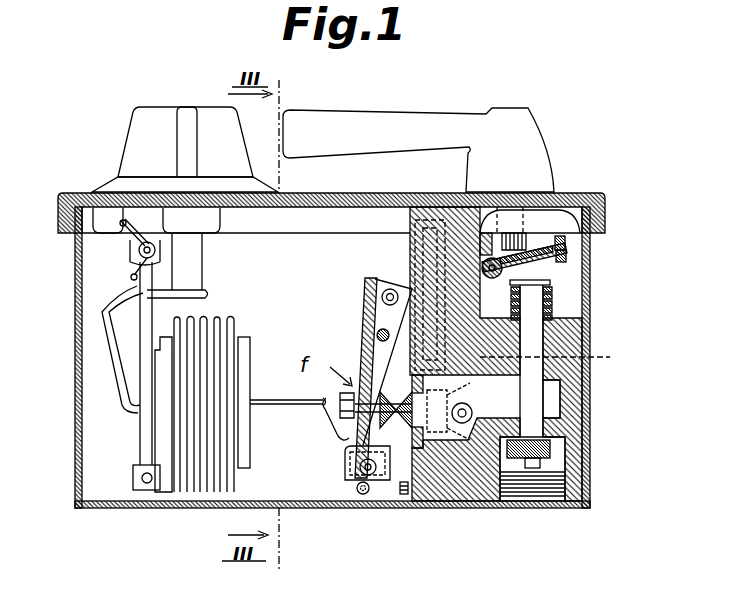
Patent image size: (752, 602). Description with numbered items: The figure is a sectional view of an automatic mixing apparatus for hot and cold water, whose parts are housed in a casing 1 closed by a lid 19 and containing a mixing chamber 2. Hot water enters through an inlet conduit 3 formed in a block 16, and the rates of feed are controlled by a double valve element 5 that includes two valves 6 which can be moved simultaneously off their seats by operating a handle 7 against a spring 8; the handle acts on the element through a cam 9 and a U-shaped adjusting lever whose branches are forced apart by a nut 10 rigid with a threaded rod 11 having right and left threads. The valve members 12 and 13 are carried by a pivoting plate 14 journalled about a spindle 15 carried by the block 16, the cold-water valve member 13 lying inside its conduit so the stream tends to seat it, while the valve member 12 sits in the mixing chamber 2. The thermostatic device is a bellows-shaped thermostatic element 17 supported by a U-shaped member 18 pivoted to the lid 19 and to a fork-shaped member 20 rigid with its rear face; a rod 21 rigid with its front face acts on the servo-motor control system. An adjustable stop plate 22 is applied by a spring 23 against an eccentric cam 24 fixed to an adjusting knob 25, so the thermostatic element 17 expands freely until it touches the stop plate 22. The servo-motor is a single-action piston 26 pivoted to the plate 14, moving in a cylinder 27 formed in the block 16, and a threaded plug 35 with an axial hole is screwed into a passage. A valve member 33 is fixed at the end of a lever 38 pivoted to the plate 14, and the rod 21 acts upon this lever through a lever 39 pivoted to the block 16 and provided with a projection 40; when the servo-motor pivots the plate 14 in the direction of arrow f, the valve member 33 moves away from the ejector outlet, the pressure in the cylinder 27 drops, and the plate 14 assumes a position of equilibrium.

The casing 1 is at (75, 448).
The mixing chamber 2 is at (270, 475).
The inlet conduit 3 is at (480, 500).
The double valve element 5 is at (533, 410).
The valve 6 is at (562, 457).
The handle 7 is at (518, 143).
The spring 8 is at (548, 310).
The cam 9 is at (573, 192).
The nut 10 is at (568, 255).
The threaded rod 11 is at (560, 241).
The valve member 12 is at (420, 500).
The valve member 13 is at (458, 480).
The pivoting plate 14 is at (360, 347).
The spindle 15 is at (378, 333).
The block 16 is at (382, 300).
The thermostatic element 17 is at (200, 452).
The U-shaped member 18 is at (147, 353).
The lid 19 is at (118, 192).
The fork-shaped member 20 is at (137, 483).
The rod 21 is at (287, 403).
The stop plate 22 is at (110, 335).
The spring 23 is at (132, 237).
The eccentric cam 24 is at (160, 292).
The adjusting knob 25 is at (147, 135).
The piston 26 is at (418, 207).
The cylinder 27 is at (559, 358).
The valve member 33 is at (338, 437).
The threaded plug 35 is at (478, 413).
The lever 38 is at (398, 487).
The lever 39 is at (360, 494).
The projection 40 is at (335, 463).